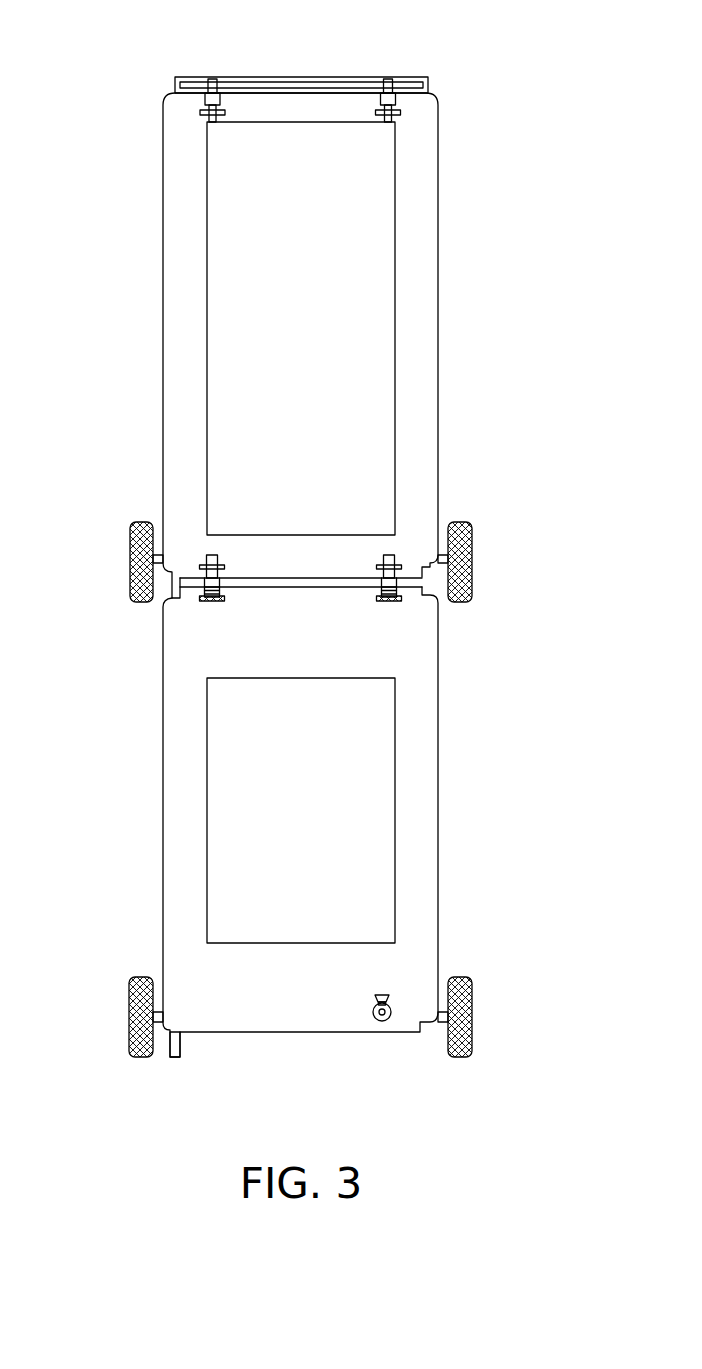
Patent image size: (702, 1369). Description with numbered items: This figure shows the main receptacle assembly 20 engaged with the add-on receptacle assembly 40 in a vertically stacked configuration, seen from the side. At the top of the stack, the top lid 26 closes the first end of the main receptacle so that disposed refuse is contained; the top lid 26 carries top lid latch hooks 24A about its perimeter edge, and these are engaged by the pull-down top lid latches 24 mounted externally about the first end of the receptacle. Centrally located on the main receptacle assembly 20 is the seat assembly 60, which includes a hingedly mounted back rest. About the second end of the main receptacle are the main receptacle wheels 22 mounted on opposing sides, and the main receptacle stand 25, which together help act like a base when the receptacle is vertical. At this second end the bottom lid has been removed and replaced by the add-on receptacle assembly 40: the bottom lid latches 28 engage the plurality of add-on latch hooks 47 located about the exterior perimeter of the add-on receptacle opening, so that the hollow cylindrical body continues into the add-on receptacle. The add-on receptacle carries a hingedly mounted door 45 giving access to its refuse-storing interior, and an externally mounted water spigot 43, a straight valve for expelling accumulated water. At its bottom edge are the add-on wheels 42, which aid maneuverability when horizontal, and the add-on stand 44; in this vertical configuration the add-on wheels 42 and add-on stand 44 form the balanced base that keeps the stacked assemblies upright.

The main receptacle assembly 20 is at (440, 200).
The main receptacle wheels 22 is at (474, 572).
The top lid latch 24 is at (200, 108).
The top lid latch hook 24A is at (211, 79).
The main receptacle stand 25 is at (171, 587).
The top lid 26 is at (297, 77).
The bottom lid latch 28 is at (211, 553).
The add-on receptacle assembly 40 is at (440, 712).
The add-on wheels 42 is at (474, 1012).
The water spigot 43 is at (382, 1022).
The add-on stand 44 is at (174, 1060).
The door 45 is at (372, 815).
The add-on latch hook 47 is at (212, 603).
The seat assembly 60 is at (363, 295).